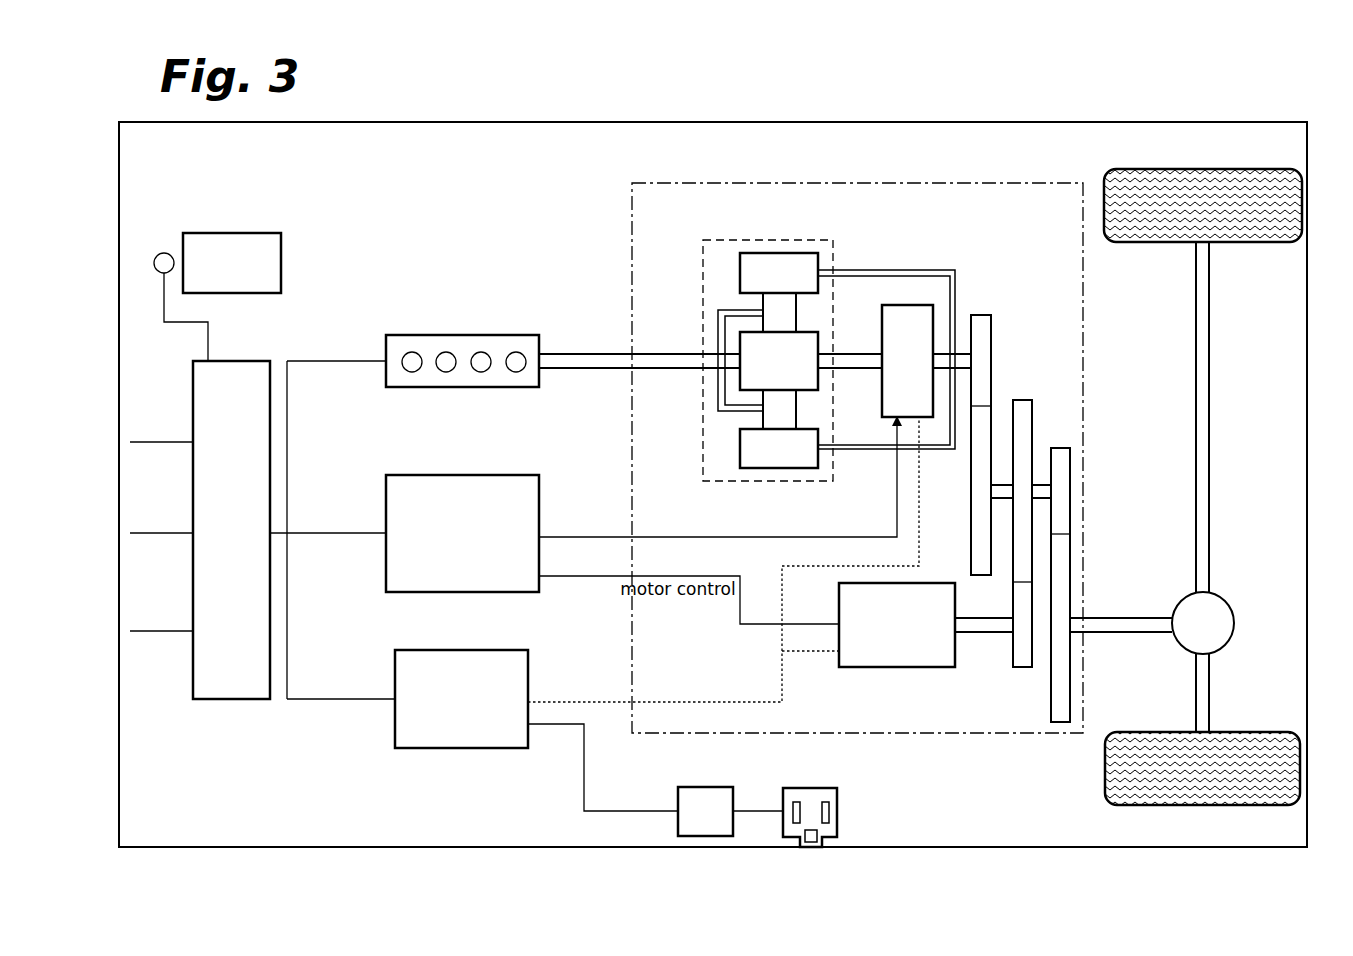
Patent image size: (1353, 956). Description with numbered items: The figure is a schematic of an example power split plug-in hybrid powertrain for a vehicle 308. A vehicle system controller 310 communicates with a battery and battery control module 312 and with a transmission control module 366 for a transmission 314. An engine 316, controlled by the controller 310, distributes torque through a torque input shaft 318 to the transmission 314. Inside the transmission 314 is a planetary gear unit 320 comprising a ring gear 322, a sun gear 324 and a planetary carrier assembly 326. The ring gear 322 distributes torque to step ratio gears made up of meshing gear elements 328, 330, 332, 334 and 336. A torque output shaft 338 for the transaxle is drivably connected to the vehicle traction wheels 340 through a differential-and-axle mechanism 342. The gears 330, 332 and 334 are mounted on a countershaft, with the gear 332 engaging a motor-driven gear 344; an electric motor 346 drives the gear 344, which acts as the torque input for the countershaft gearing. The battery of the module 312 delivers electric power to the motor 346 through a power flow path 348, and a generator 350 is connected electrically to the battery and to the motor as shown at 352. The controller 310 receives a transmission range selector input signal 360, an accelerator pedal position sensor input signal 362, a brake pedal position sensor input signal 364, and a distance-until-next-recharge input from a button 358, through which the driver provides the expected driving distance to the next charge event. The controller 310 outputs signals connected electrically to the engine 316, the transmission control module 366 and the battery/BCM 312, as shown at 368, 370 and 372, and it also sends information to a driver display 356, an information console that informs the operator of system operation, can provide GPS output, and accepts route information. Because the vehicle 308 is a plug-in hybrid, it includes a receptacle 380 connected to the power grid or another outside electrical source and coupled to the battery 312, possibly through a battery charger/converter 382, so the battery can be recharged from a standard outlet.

The vehicle 308 is at (1000, 92).
The vehicle system controller 310 is at (232, 361).
The battery and battery control module 312 is at (460, 650).
The transmission 314 is at (768, 733).
The engine 316 is at (490, 335).
The torque input shaft 318 is at (612, 371).
The planetary gear unit 320 is at (842, 259).
The ring gear 322 is at (740, 272).
The sun gear 324 is at (740, 352).
The planetary carrier assembly 326 is at (718, 330).
The gear element 328 is at (982, 315).
The gear element 330 is at (971, 547).
The gear element 332 is at (1022, 400).
The gear element 334 is at (1060, 448).
The gear element 336 is at (1073, 582).
The torque output shaft 338 is at (1155, 632).
The vehicle traction wheels 340 is at (1203, 169).
The differential-and-axle mechanism 342 is at (1235, 622).
The motor-driven gear 344 is at (1022, 667).
The electric motor 346 is at (902, 667).
The power flow path 348 is at (768, 700).
The generator 350 is at (905, 305).
The generator electrical connection 352 is at (868, 555).
The driver display 356 is at (281, 268).
The button 358 is at (166, 253).
The transmission range selector input signal 360 is at (178, 445).
The accelerator pedal position sensor input signal 362 is at (178, 536).
The brake pedal position sensor input signal 364 is at (178, 634).
The transmission control module 366 is at (440, 475).
The output signal to engine 368 is at (305, 361).
The output signal to transmission control module 370 is at (305, 533).
The output signal to battery/BCM 372 is at (305, 699).
The receptacle 380 is at (837, 823).
The battery charger/converter 382 is at (630, 780).